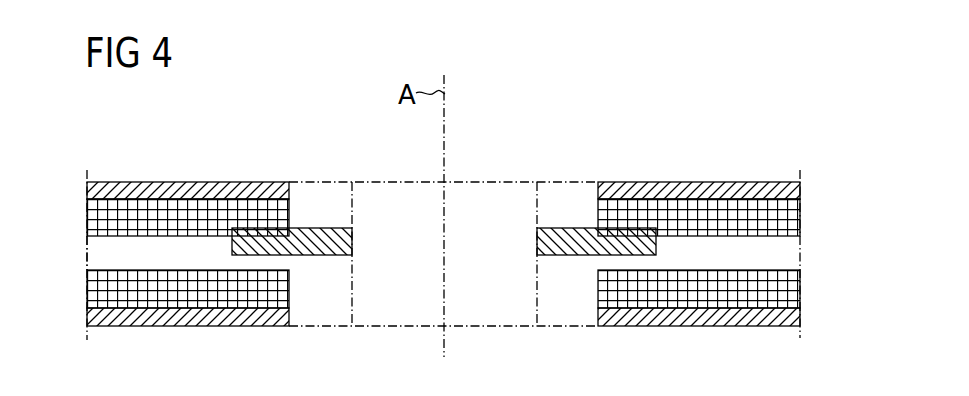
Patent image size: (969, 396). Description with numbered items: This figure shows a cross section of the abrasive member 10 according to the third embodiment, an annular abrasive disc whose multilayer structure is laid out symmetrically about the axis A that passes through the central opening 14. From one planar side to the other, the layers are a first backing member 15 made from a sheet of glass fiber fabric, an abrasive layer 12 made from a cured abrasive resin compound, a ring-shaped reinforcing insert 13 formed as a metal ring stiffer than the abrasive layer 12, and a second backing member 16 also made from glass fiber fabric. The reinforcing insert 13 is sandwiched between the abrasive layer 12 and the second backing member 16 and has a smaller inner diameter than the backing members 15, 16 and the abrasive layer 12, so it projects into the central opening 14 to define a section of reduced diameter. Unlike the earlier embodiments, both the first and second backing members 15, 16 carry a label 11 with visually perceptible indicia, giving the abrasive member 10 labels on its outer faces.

The abrasive member 10 is at (700, 148).
The label 11 is at (158, 190).
The abrasive layer 12 is at (121, 254).
The reinforcing insert 13 is at (319, 228).
The central opening 14 is at (486, 236).
The first backing member 15 is at (792, 291).
The second backing member 16 is at (792, 212).